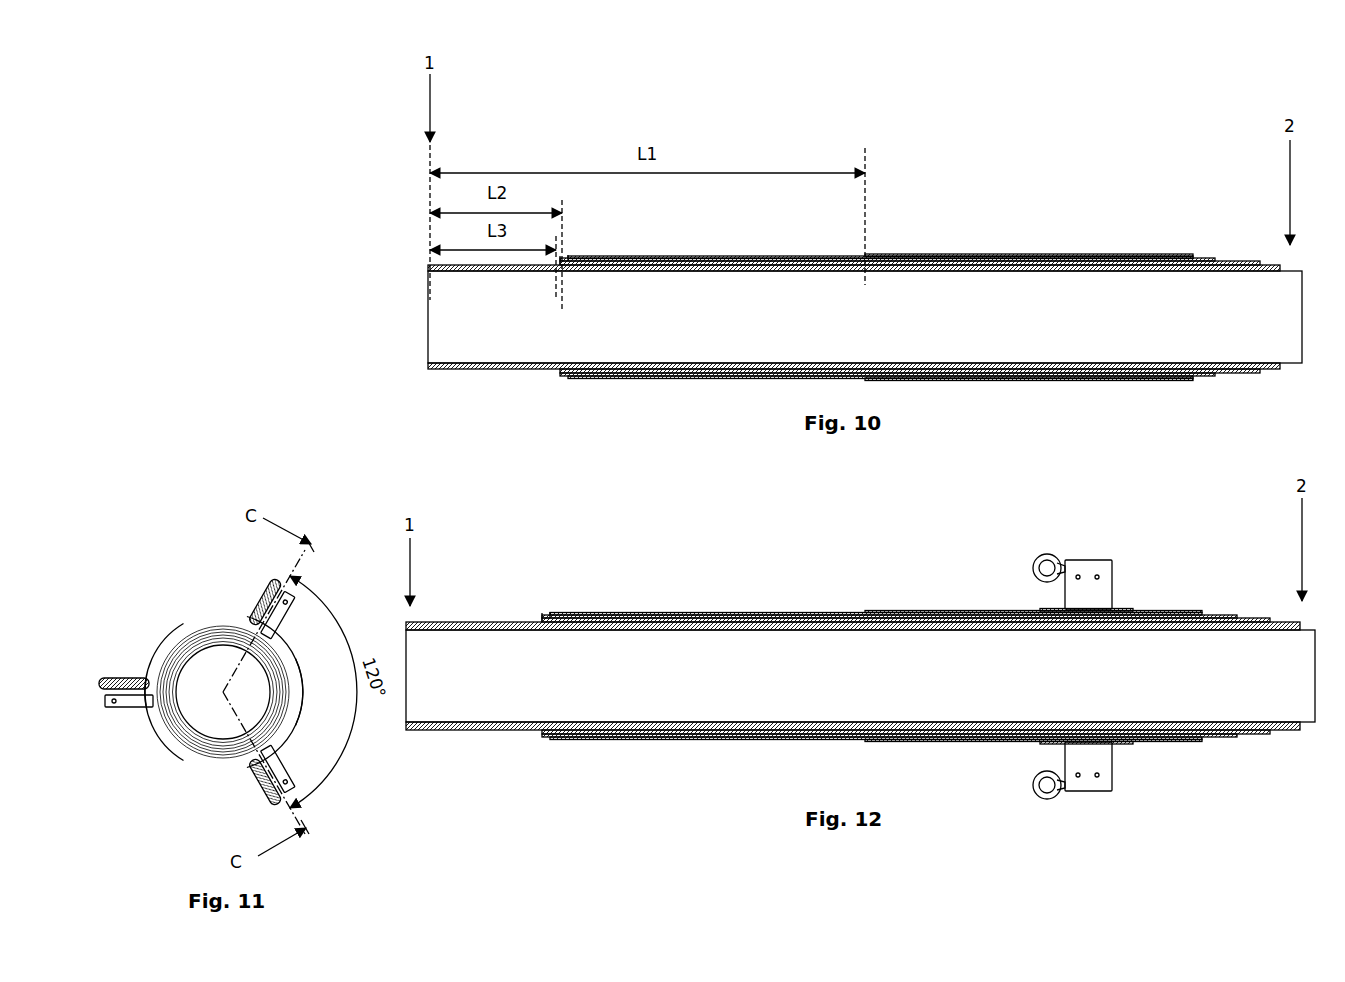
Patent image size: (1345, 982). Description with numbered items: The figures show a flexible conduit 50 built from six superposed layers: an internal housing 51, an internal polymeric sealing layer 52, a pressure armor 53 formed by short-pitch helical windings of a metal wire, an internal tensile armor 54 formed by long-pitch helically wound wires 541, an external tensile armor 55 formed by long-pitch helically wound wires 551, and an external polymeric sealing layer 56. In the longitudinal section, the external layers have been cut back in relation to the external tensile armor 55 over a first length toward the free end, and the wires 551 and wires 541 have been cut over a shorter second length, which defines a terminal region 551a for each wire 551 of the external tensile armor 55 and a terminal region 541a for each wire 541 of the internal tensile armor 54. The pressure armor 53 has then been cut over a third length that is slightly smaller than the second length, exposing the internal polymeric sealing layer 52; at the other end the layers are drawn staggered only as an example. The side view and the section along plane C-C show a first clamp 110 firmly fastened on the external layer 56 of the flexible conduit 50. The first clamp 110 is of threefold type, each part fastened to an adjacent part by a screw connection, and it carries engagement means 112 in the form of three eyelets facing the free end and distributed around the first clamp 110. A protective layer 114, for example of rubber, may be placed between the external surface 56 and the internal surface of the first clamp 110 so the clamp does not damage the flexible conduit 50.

In FIG. 10, the flexible conduit 50 is at (986, 392).
In FIG. 11, the flexible conduit 50 is at (185, 740).
In FIG. 12, the flexible conduit 50 is at (721, 770).
In FIG. 10, the internal housing 51 is at (428, 363).
In FIG. 12, the internal housing 51 is at (406, 728).
In FIG. 10, the internal polymeric sealing layer 52 is at (452, 368).
In FIG. 12, the internal polymeric sealing layer 52 is at (468, 733).
In FIG. 10, the pressure armor 53 is at (562, 376).
In FIG. 12, the pressure armor 53 is at (544, 740).
In FIG. 10, the internal tensile armor 54 is at (1229, 259).
In FIG. 12, the internal tensile armor 54 is at (1241, 616).
In FIG. 10, the wires 541 is at (737, 258).
In FIG. 12, the wires 541 is at (713, 613).
In FIG. 10, the terminal region 541a is at (561, 257).
In FIG. 12, the terminal region 541a is at (544, 613).
In FIG. 10, the external tensile armor 55 is at (1205, 256).
In FIG. 12, the external tensile armor 55 is at (1219, 612).
In FIG. 10, the wires 551 is at (766, 256).
In FIG. 12, the wires 551 is at (749, 613).
In FIG. 10, the terminal region 551a is at (572, 257).
In FIG. 12, the terminal region 551a is at (581, 613).
In FIG. 10, the external polymeric sealing layer 56 is at (880, 256).
In FIG. 12, the external polymeric sealing layer 56 is at (882, 612).
In FIG. 11, the first clamp 110 is at (164, 631).
In FIG. 12, the first clamp 110 is at (1097, 560).
In FIG. 11, the engagement means 112 is at (104, 704).
In FIG. 12, the engagement means 112 is at (1037, 561).
In FIG. 12, the protective layer 114 is at (1123, 610).